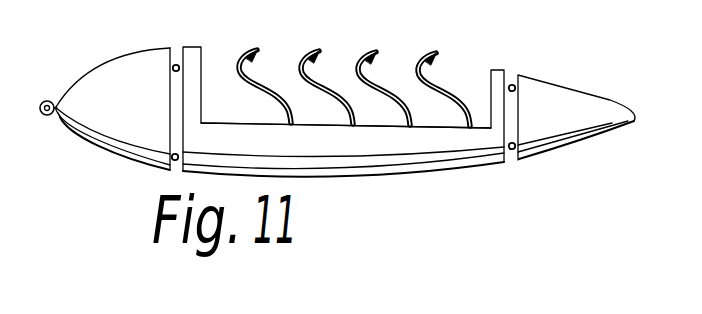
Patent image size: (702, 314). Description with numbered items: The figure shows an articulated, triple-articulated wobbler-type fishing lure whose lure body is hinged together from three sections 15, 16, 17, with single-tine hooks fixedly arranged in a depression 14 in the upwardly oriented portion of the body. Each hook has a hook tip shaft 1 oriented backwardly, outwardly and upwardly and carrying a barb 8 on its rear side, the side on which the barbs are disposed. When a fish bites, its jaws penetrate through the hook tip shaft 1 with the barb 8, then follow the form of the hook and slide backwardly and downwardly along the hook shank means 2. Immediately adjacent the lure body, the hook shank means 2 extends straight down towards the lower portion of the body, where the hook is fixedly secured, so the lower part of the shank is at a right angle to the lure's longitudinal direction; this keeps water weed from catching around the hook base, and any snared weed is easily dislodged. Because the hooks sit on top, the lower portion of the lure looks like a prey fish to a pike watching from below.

The hook tip shaft 1 is at (300, 63).
The hook shank means 2 is at (328, 92).
The barb 8 is at (375, 57).
The depression 14 is at (463, 77).
The lure body section 15 is at (112, 70).
The lure body section 16 is at (194, 48).
The lure body section 17 is at (550, 97).